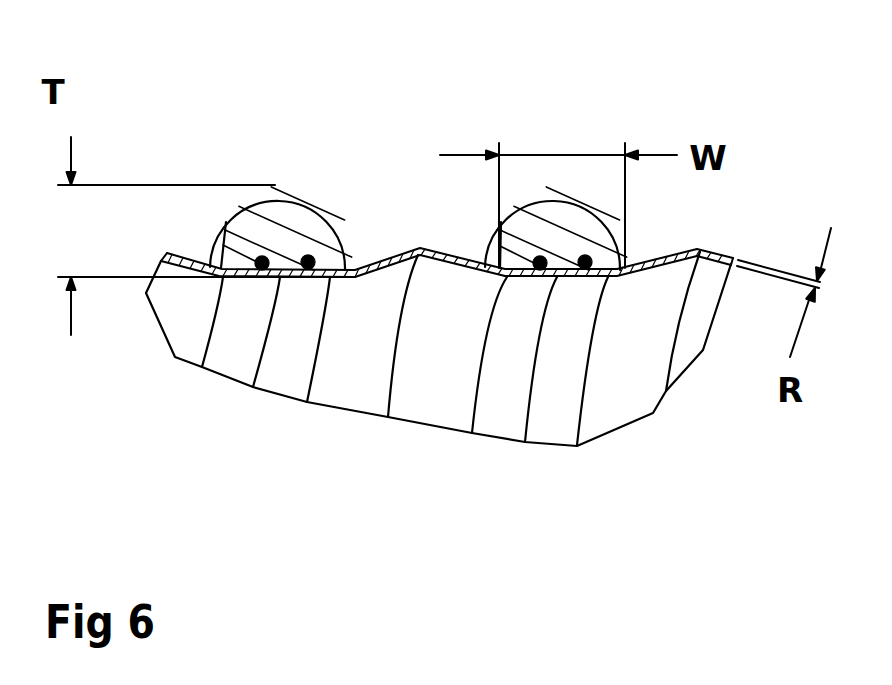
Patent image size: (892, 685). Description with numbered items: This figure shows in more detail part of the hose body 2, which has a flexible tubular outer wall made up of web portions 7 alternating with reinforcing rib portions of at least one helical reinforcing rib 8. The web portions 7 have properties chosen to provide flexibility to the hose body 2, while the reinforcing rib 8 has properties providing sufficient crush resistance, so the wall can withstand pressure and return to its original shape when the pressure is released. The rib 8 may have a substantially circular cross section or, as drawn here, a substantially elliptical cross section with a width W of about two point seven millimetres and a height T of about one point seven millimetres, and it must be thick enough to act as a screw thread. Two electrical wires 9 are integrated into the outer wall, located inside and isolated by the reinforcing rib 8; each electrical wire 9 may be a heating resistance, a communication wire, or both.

The hose body 2 is at (453, 297).
The web portions 7 is at (332, 365).
The helical reinforcing rib 8 is at (313, 190).
The electrical wire 9 is at (309, 266).